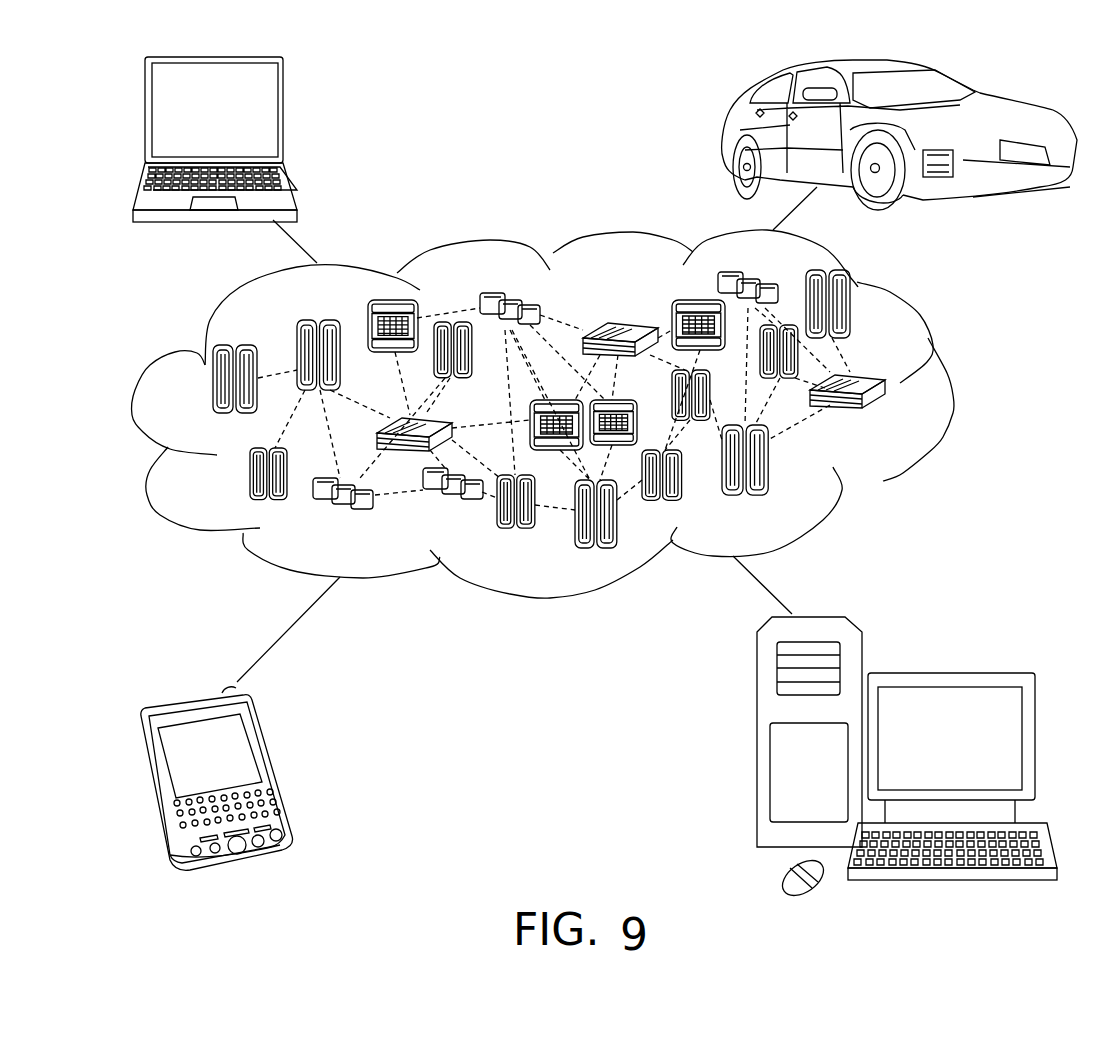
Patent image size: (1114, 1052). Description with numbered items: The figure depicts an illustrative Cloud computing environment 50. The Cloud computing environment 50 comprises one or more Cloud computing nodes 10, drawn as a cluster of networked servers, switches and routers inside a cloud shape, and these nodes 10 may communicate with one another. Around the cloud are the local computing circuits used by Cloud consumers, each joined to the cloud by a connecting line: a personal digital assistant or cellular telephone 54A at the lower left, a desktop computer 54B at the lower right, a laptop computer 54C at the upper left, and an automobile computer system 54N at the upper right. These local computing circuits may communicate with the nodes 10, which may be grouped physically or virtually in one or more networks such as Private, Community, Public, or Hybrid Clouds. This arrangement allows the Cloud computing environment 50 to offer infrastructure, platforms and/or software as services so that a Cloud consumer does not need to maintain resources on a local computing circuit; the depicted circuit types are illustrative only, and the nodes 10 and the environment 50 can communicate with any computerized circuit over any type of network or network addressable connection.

The Cloud computing node 10 is at (888, 417).
The Cloud computing environment 50 is at (950, 392).
The personal digital assistant (PDA) or cellular telephone 54A is at (273, 768).
The desktop computer 54B is at (947, 672).
The laptop computer 54C is at (283, 120).
The automobile computer system 54N is at (725, 132).